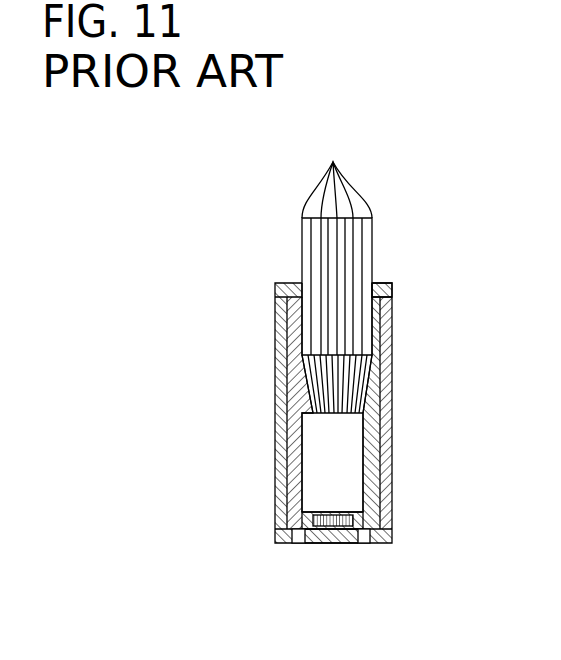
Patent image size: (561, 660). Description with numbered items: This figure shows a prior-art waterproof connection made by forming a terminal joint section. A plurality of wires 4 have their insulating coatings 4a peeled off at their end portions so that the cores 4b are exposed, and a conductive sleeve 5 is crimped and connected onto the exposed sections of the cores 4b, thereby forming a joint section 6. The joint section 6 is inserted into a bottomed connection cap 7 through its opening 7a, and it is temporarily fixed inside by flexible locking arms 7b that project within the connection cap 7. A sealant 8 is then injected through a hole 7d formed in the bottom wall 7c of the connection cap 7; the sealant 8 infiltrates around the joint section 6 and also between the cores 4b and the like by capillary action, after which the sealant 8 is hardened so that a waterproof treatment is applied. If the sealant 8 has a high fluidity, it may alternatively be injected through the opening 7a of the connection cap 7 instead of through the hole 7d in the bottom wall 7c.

The wires 4 is at (337, 244).
The insulating coatings 4a is at (337, 260).
The cores 4b is at (355, 520).
The conductive sleeve 5 is at (357, 495).
The joint section 6 is at (468, 490).
The connection cap 7 is at (399, 317).
The opening 7a is at (380, 286).
The flexible locking arms 7b is at (286, 481).
The bottom wall 7c is at (330, 543).
The hole 7d is at (297, 543).
The sealant 8 is at (296, 517).